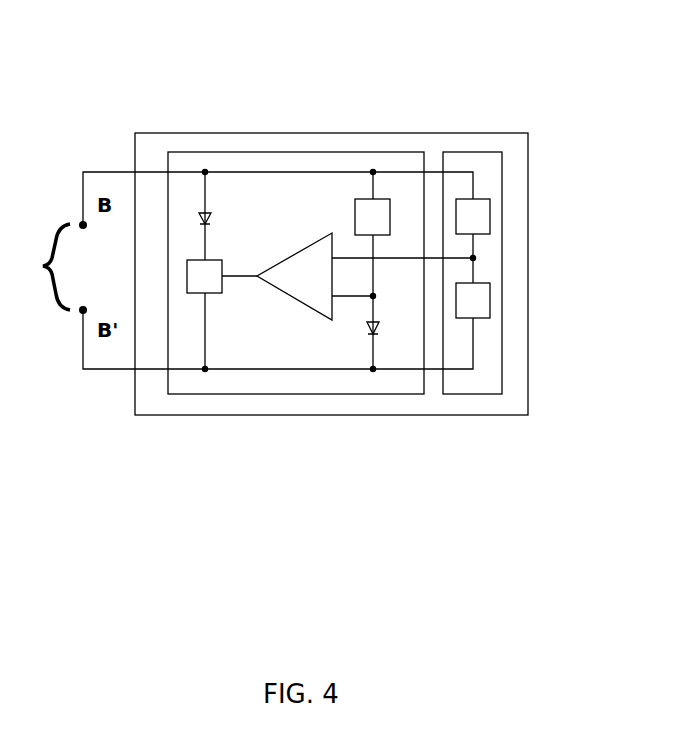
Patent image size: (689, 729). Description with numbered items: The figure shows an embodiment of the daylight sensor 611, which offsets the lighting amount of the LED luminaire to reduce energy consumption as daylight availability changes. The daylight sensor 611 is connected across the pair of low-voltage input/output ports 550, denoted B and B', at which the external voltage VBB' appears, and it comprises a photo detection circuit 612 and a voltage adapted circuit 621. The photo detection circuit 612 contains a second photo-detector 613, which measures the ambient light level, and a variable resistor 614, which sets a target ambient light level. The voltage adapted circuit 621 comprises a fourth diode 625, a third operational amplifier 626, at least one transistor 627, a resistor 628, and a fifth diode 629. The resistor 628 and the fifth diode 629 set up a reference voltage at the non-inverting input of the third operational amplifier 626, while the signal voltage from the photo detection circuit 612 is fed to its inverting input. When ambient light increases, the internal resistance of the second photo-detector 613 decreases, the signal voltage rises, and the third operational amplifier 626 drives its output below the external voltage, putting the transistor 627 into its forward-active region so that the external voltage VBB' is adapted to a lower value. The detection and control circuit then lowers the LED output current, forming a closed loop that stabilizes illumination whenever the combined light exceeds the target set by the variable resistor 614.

The pair of low-voltage input/output ports 550 is at (54, 227).
The daylight sensor 611 is at (340, 133).
The photo detection circuit 612 is at (505, 217).
The second photo-detector 613 is at (482, 199).
The variable resistor 614 is at (480, 318).
The voltage adapted circuit 621 is at (342, 395).
The fourth diode 625 is at (203, 212).
The third operational amplifier 626 is at (293, 253).
The at least one transistor 627 is at (213, 293).
The resistor 628 is at (383, 199).
The fifth diode 629 is at (376, 330).